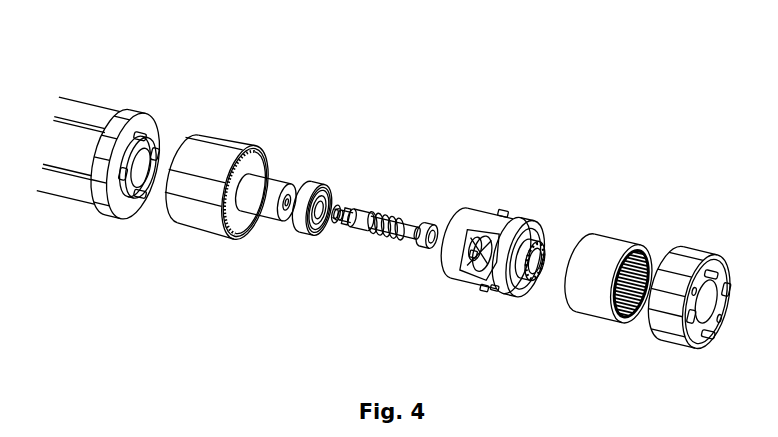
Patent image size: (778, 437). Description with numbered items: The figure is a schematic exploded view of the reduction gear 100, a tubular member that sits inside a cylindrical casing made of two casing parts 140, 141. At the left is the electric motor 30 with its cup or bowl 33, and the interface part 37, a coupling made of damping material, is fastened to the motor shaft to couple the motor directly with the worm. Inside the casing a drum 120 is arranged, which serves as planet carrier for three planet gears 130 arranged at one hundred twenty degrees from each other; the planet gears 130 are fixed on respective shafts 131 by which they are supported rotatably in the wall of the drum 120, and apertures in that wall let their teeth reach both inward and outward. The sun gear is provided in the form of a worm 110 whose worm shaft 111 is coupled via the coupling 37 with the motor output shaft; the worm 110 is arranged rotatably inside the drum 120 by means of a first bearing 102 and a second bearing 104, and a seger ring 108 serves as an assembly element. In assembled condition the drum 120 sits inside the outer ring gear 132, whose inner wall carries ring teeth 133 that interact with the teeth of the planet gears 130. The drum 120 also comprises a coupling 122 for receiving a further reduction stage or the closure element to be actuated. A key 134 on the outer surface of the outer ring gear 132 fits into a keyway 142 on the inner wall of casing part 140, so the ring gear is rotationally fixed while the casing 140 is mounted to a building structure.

The reduction gear 100 is at (473, 88).
The electric motor 30 is at (90, 96).
The cup or bowl 33 is at (102, 200).
The interface part 37 is at (268, 206).
The casing part 140 is at (198, 150).
The keyway 142 is at (257, 168).
The first bearing 102 is at (322, 185).
The seger ring 108 is at (335, 224).
The worm shaft 111 is at (349, 210).
The worm 110 is at (398, 214).
The second bearing 104 is at (424, 244).
The drum 120 is at (512, 208).
The coupling 122 is at (541, 240).
The planet gears 130 is at (501, 220).
The shafts 131 is at (487, 288).
The outer ring gear 132 is at (608, 242).
The ring teeth 133 is at (623, 326).
The key 134 is at (665, 250).
The casing part 141 is at (703, 342).